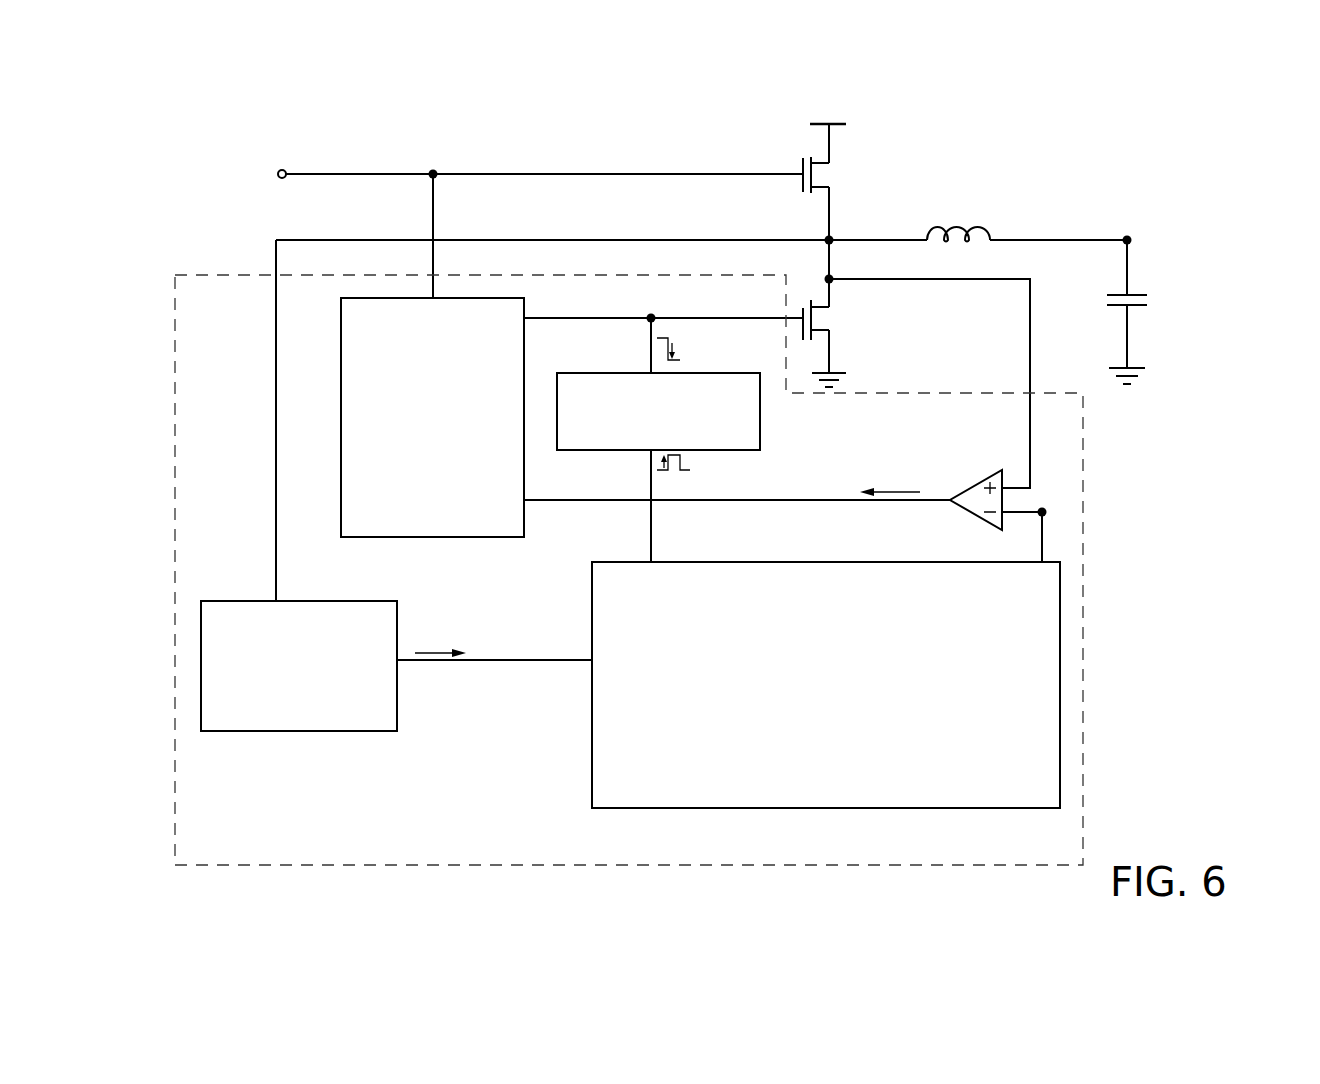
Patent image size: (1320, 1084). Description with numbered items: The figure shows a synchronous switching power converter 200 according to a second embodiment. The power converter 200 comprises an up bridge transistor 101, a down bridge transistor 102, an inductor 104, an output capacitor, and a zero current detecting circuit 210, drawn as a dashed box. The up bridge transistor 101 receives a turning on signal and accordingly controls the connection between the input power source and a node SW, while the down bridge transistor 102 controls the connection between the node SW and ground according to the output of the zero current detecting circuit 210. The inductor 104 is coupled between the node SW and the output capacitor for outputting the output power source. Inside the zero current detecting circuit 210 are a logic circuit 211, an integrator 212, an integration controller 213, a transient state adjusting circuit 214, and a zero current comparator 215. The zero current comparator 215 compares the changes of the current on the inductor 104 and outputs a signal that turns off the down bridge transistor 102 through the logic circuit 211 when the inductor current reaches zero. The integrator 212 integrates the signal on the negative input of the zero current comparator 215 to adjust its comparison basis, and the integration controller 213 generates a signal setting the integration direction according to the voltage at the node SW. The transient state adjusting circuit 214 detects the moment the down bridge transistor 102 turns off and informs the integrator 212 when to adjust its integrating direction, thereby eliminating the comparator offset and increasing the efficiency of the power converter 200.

The up bridge transistor 101 is at (838, 178).
The down bridge transistor 102 is at (838, 321).
The inductor 104 is at (956, 225).
The synchronous switching power converter 200 is at (1160, 152).
The zero current detecting circuit 210 is at (1085, 612).
The logic circuit 211 is at (526, 352).
The integrator 212 is at (589, 738).
The integration controller 213 is at (300, 733).
The transient state adjusting circuit 214 is at (762, 421).
The zero current comparator 215 is at (975, 484).